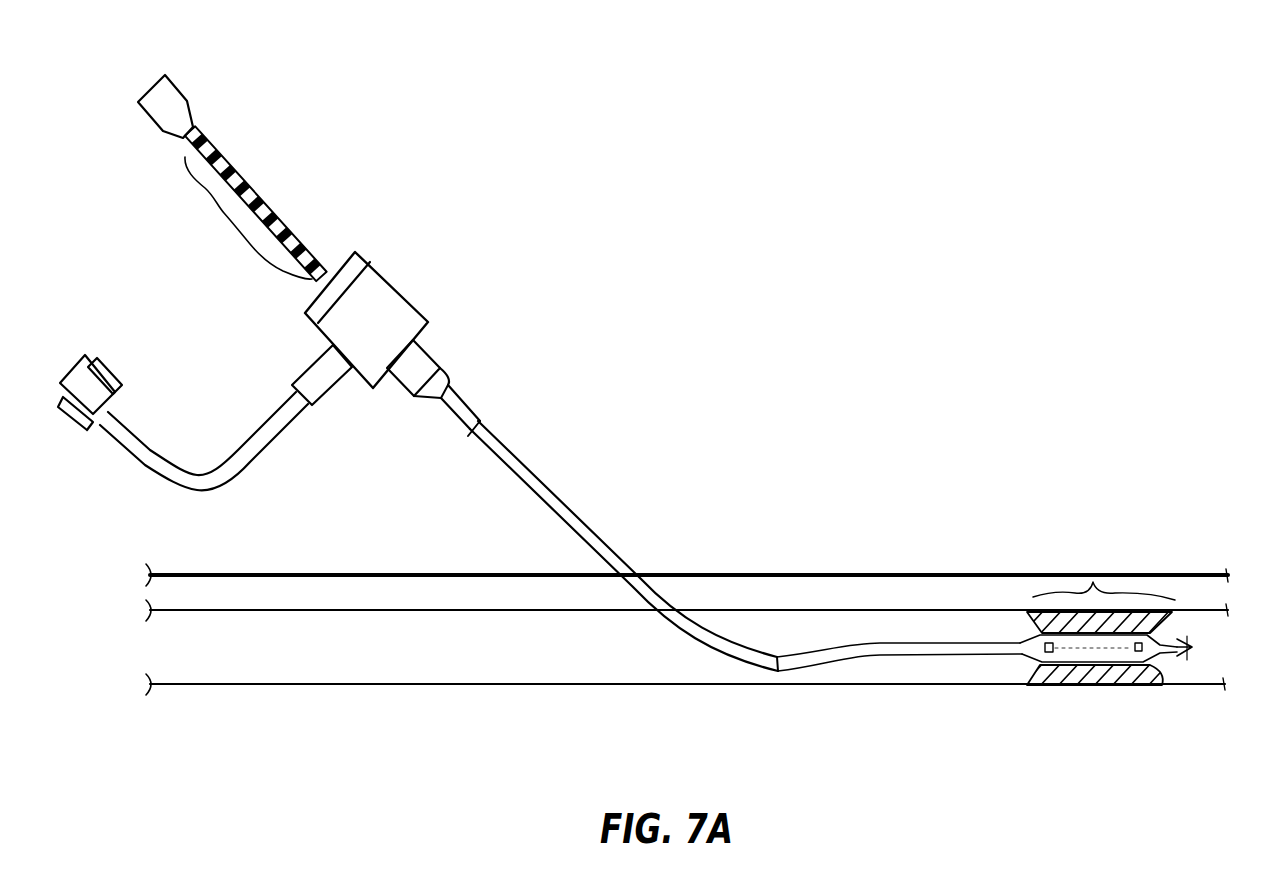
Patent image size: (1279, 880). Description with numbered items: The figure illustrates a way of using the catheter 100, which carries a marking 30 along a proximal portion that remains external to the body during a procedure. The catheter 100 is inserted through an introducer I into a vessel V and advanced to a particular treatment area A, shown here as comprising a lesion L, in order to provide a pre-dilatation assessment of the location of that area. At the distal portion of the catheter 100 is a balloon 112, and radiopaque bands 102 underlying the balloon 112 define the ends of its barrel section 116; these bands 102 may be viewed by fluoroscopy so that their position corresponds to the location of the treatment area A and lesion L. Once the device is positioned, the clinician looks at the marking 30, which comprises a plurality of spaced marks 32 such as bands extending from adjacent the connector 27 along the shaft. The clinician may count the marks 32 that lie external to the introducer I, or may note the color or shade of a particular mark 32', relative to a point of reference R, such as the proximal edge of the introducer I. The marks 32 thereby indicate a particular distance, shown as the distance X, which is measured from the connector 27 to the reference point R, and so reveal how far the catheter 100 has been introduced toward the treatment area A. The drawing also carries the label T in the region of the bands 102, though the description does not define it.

The catheter 100 is at (287, 168).
The connector 27 is at (183, 87).
The marks 32 is at (256, 188).
The particular mark 32' is at (303, 330).
The marking 30 is at (307, 210).
The bands 102 is at (1042, 657).
The balloon 112 is at (1153, 637).
The barrel section 116 is at (1095, 687).
The point of reference R is at (357, 250).
The introducer I is at (407, 288).
The distance X is at (248, 218).
The lesion L is at (1030, 612).
The treatment area A is at (1104, 565).
The vessel V is at (350, 690).
The target site T is at (1123, 687).